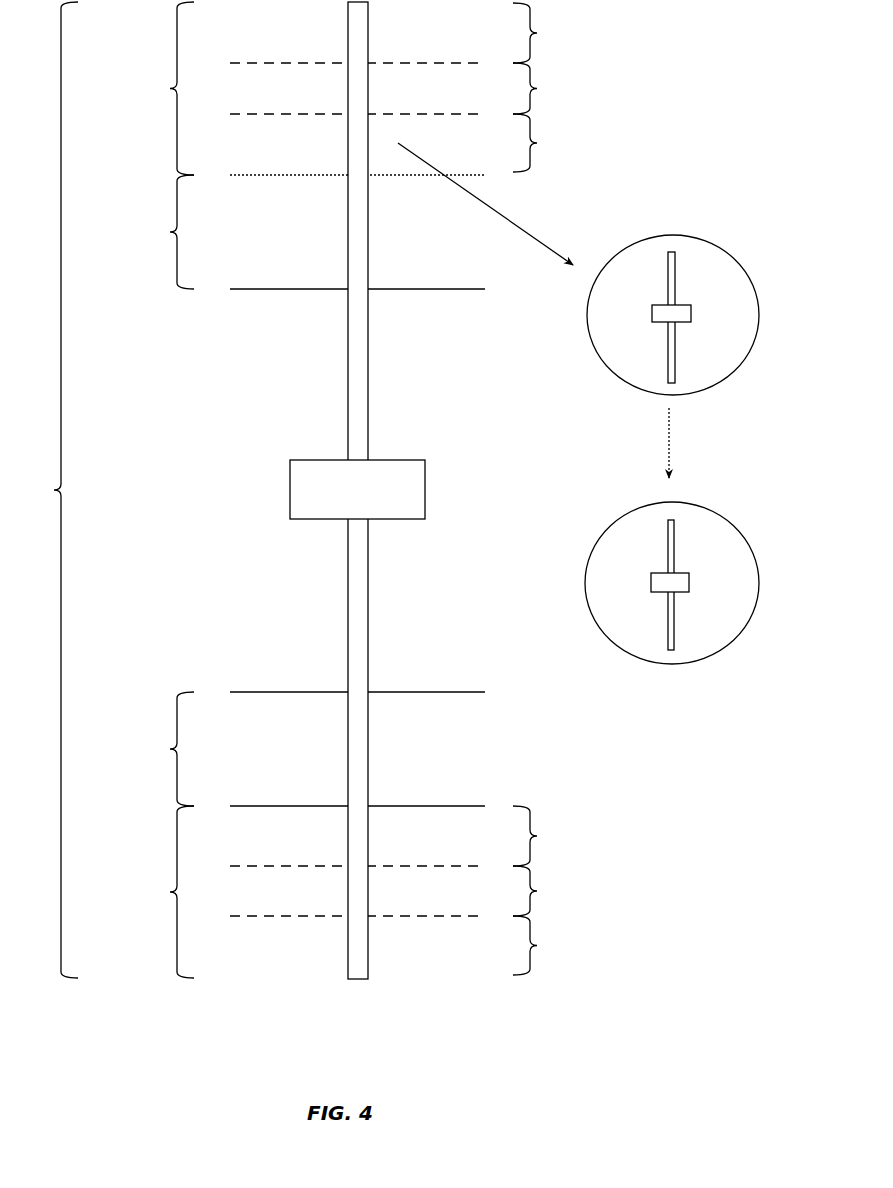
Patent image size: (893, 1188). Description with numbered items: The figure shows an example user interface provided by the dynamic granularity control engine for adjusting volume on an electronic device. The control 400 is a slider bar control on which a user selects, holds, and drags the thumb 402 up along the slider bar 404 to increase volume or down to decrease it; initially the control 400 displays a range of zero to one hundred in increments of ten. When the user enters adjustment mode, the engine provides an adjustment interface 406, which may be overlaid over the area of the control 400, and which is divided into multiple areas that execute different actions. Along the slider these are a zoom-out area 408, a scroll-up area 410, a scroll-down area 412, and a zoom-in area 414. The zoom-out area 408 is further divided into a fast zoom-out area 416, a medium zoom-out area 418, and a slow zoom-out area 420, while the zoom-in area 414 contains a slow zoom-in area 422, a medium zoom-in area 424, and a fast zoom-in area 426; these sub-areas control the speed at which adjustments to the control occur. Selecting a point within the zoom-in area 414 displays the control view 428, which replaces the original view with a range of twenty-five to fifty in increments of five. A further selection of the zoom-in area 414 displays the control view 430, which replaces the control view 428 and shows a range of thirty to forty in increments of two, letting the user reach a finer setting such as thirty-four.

The control 400 is at (525, 1020).
The thumb 402 is at (436, 492).
The slider bar 404 is at (376, 373).
The adjustment interface 406 is at (43, 490).
The zoom-out area 408 is at (155, 892).
The scroll-up area 410 is at (155, 749).
The scroll-down area 412 is at (155, 232).
The zoom-in area 414 is at (155, 88).
The fast zoom-out area 416 is at (545, 945).
The medium zoom-out area 418 is at (545, 891).
The slow zoom-out area 420 is at (545, 836).
The slow zoom-in area 422 is at (545, 143).
The medium zoom-in area 424 is at (545, 88).
The fast zoom-in area 426 is at (545, 33).
The control view 428 is at (713, 261).
The control view 430 is at (713, 530).